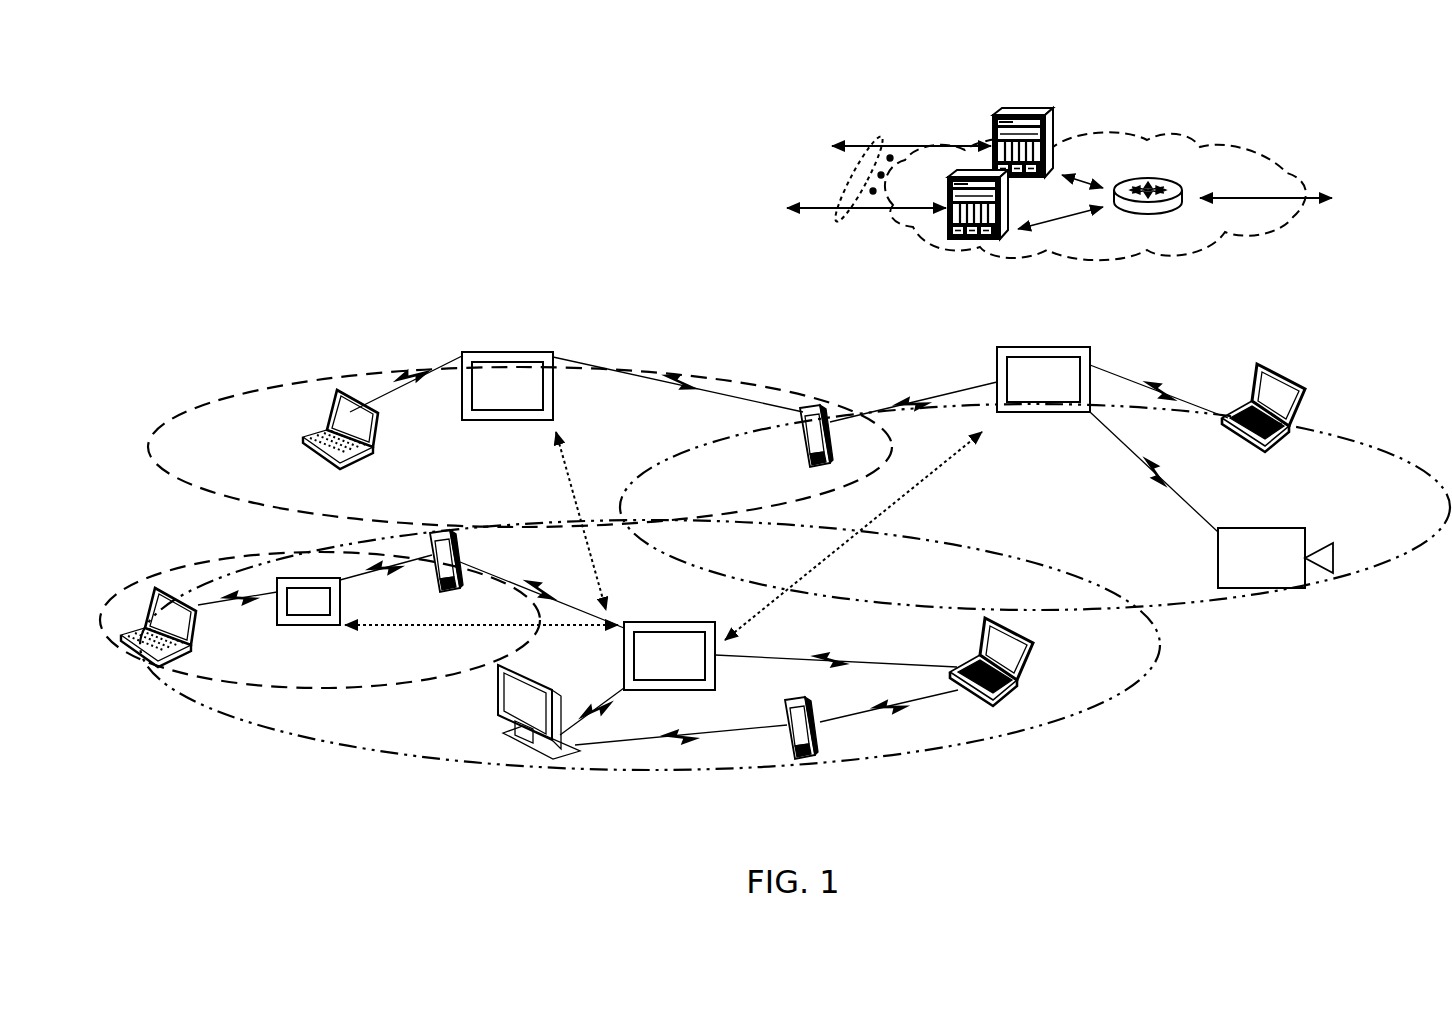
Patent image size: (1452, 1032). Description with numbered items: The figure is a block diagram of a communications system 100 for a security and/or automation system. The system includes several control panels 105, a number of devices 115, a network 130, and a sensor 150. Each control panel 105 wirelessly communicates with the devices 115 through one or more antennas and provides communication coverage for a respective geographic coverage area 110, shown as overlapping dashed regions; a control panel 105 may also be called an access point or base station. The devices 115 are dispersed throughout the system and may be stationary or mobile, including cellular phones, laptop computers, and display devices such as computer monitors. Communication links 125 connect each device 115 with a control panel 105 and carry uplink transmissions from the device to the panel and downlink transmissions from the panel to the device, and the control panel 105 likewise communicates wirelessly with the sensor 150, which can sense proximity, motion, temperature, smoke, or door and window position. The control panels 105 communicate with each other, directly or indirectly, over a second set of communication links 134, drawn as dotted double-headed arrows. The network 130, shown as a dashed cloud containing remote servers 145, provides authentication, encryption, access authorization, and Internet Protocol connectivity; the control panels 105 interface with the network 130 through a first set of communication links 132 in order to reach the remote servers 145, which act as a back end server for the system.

The communications system 100 is at (1342, 805).
The control panel 105 is at (535, 350).
The geographic coverage area 110 is at (208, 510).
The device 115 is at (357, 457).
The communication link 125 is at (413, 370).
The network 130 is at (1188, 250).
The first set of communication links 132 is at (846, 222).
The second set of communication links 134 is at (598, 565).
The remote server 145 is at (1023, 107).
The sensor 150 is at (1218, 558).